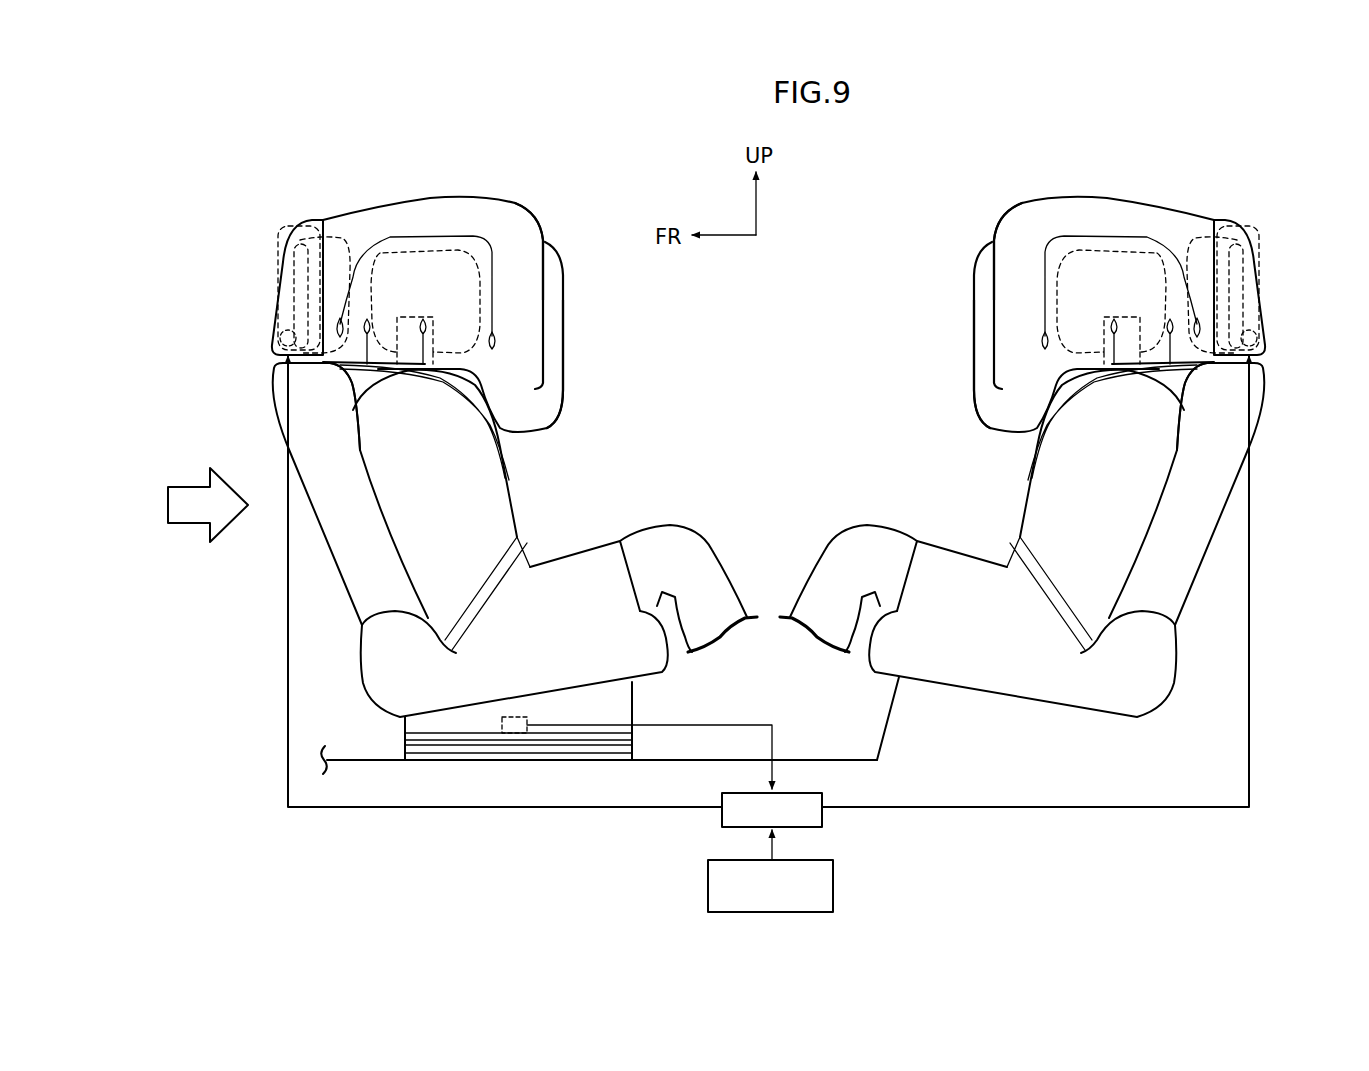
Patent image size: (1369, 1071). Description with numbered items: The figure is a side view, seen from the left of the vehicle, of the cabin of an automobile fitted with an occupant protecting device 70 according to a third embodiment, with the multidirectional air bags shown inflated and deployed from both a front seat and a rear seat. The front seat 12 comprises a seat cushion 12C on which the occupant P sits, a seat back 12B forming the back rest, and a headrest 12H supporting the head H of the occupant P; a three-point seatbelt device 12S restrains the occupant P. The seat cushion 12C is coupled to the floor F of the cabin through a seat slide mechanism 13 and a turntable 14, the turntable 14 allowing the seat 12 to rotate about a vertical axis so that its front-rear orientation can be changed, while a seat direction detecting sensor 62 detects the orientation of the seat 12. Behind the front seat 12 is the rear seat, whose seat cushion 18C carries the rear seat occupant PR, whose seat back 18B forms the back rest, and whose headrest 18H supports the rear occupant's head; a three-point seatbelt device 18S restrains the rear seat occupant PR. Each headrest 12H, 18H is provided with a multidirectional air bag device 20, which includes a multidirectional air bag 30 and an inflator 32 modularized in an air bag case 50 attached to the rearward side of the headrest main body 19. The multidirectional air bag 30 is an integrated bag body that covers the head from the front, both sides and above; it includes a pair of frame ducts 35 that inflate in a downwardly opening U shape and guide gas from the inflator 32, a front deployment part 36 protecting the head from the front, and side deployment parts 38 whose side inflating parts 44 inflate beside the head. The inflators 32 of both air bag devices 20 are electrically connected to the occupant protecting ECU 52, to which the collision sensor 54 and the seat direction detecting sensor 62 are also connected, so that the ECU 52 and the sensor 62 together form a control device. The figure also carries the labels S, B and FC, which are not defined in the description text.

The seat 12 is at (674, 668).
The seat back 12B is at (370, 533).
The seat cushion 12C is at (575, 650).
The headrest 12H is at (287, 227).
The three point type seatbelt device 12S is at (511, 463).
The seat slide mechanism 13 is at (405, 748).
The turntable 14 is at (405, 733).
The seat back 18B is at (1167, 533).
The seat cushion 18C is at (975, 670).
The headrest 18H is at (1250, 227).
The three point type seatbelt device 18S is at (1026, 463).
The headrest main body 19 is at (294, 293).
The multidirectional air bag device 20 is at (418, 186).
The multidirectional air bag 30 is at (578, 266).
The inflator 32 is at (280, 340).
The frame duct 35 is at (543, 231).
The front deployment part 36 is at (564, 321).
The side deployment part 38 is at (490, 238).
The side inflating part 44 is at (768, 307).
The air bag case 50 is at (273, 320).
The occupant protecting ECU 52 is at (721, 815).
The collision sensor 54 is at (707, 882).
The seat direction detecting sensor 62 is at (515, 715).
The occupant protecting device 70 is at (842, 190).
The head H is at (300, 246).
The shoulder of occupant S is at (380, 413).
The chest of occupant B is at (478, 430).
The occupant P is at (605, 538).
The rear seat occupant PR is at (929, 538).
The floor F is at (833, 758).
The front collision direction FC is at (192, 483).